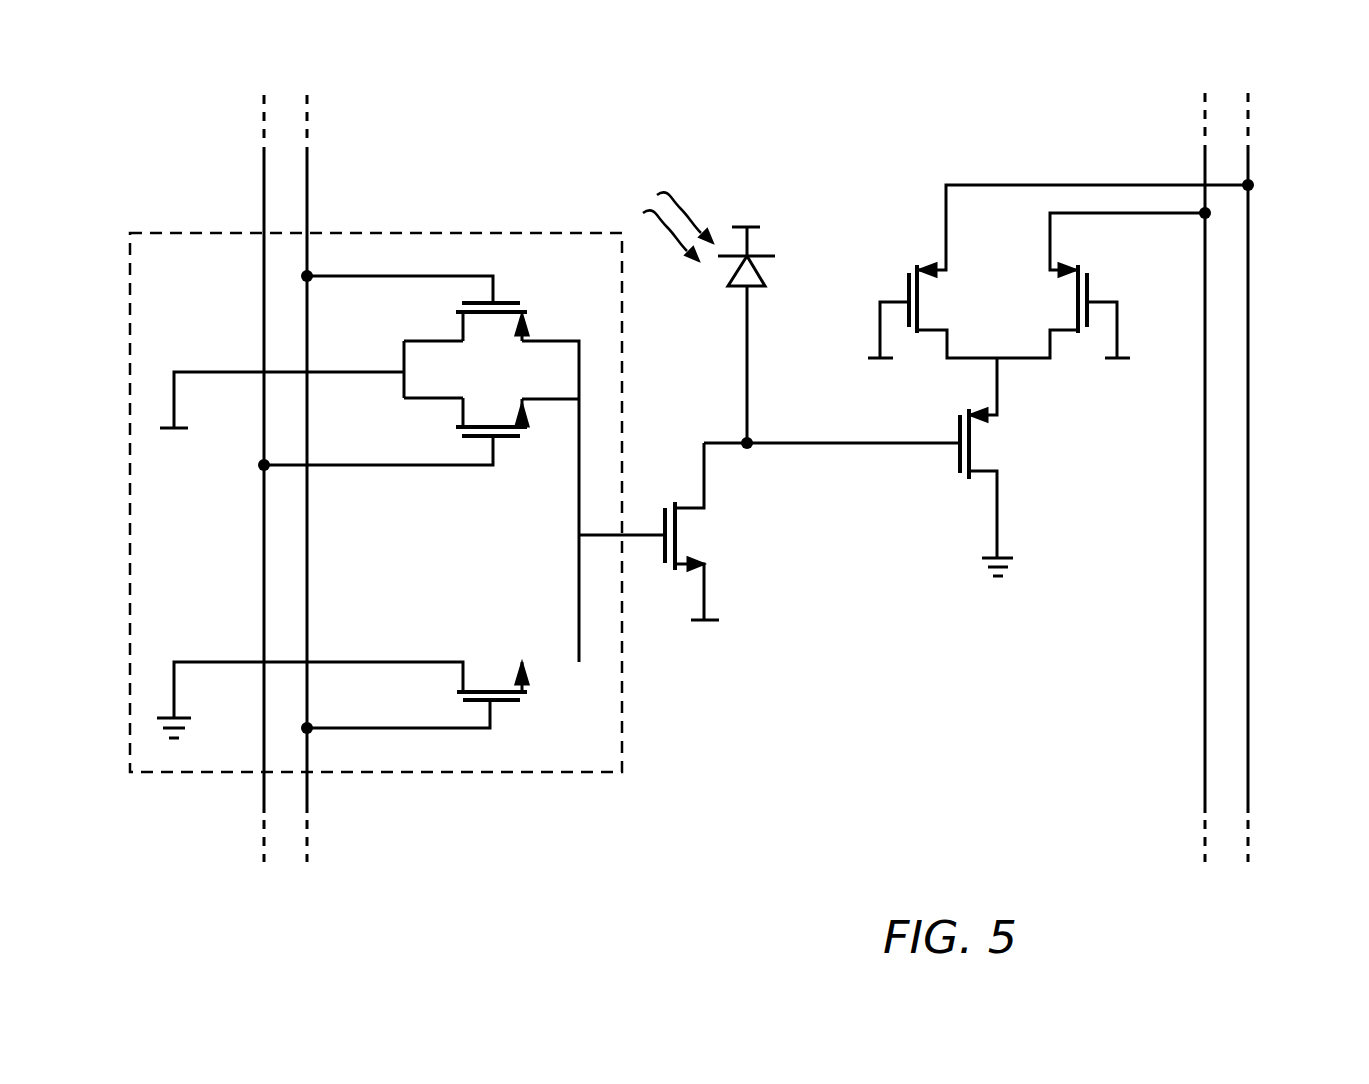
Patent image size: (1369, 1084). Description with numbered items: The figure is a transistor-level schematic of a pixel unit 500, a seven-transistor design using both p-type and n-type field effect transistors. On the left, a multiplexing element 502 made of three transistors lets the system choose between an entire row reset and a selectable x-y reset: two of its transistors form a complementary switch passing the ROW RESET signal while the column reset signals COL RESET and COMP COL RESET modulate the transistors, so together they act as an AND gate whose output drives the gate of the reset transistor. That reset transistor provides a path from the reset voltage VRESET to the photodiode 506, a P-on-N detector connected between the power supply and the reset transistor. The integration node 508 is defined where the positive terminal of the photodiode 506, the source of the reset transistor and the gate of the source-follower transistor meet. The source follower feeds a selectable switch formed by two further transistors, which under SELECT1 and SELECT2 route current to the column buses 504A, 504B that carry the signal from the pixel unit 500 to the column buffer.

The pixel unit 500 is at (142, 122).
The multiplexing element 502 is at (390, 225).
The column bus 504A is at (1205, 615).
The column bus 504B is at (1248, 645).
The photodiode 506 is at (742, 288).
The integration node 508 is at (750, 448).